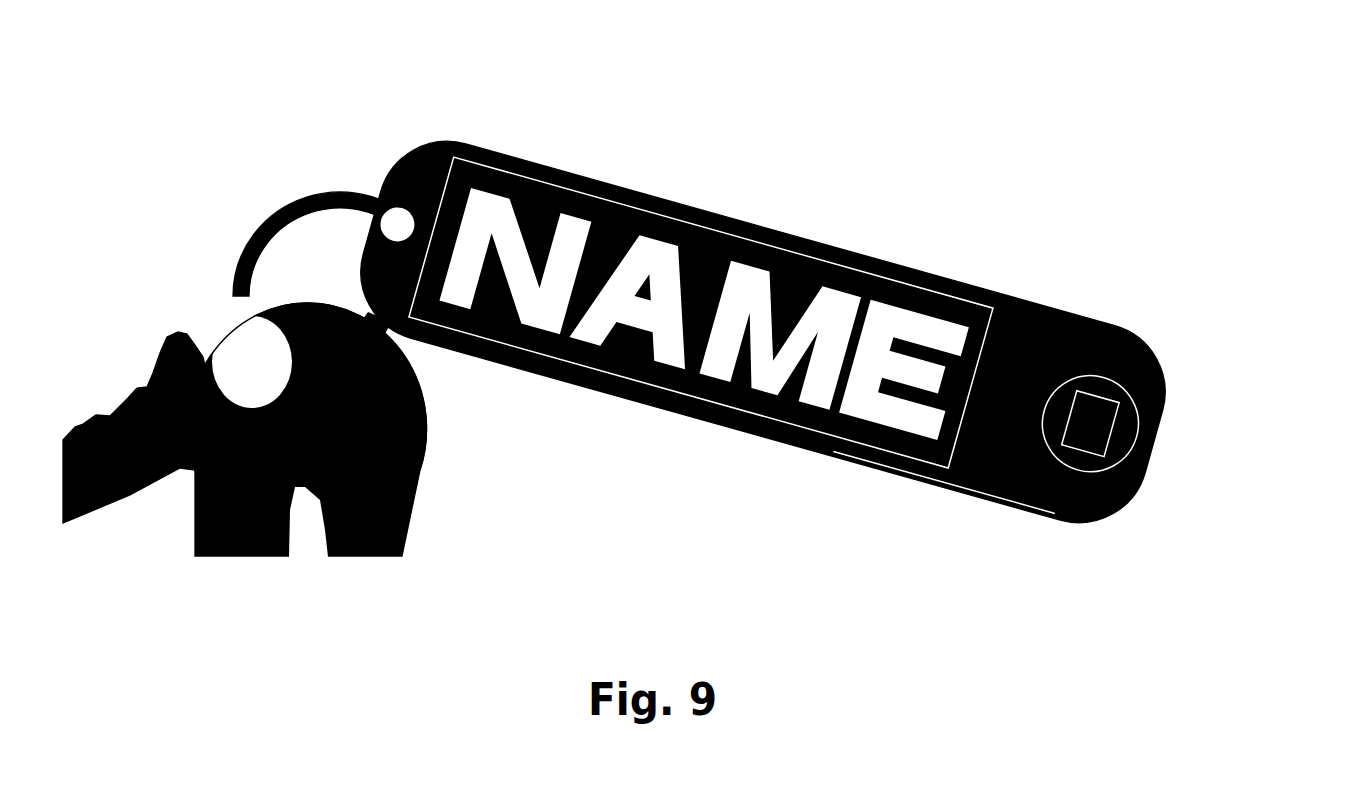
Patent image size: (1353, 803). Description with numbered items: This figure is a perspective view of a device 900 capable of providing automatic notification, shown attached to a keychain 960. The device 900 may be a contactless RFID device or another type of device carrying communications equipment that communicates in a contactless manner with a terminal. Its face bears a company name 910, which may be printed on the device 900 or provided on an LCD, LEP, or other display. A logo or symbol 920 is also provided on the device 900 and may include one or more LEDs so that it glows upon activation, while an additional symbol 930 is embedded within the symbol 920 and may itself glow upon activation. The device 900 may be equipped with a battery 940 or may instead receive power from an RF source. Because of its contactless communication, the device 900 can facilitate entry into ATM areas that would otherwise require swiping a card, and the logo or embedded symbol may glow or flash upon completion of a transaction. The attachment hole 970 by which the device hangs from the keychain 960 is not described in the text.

The device 900 is at (763, 331).
The company name 910 is at (703, 262).
The logo or symbol 920 is at (1189, 363).
The additional symbol 930 is at (1185, 474).
The battery 940 is at (941, 555).
The keychain 960 is at (329, 218).
The attachment hole 970 is at (445, 138).